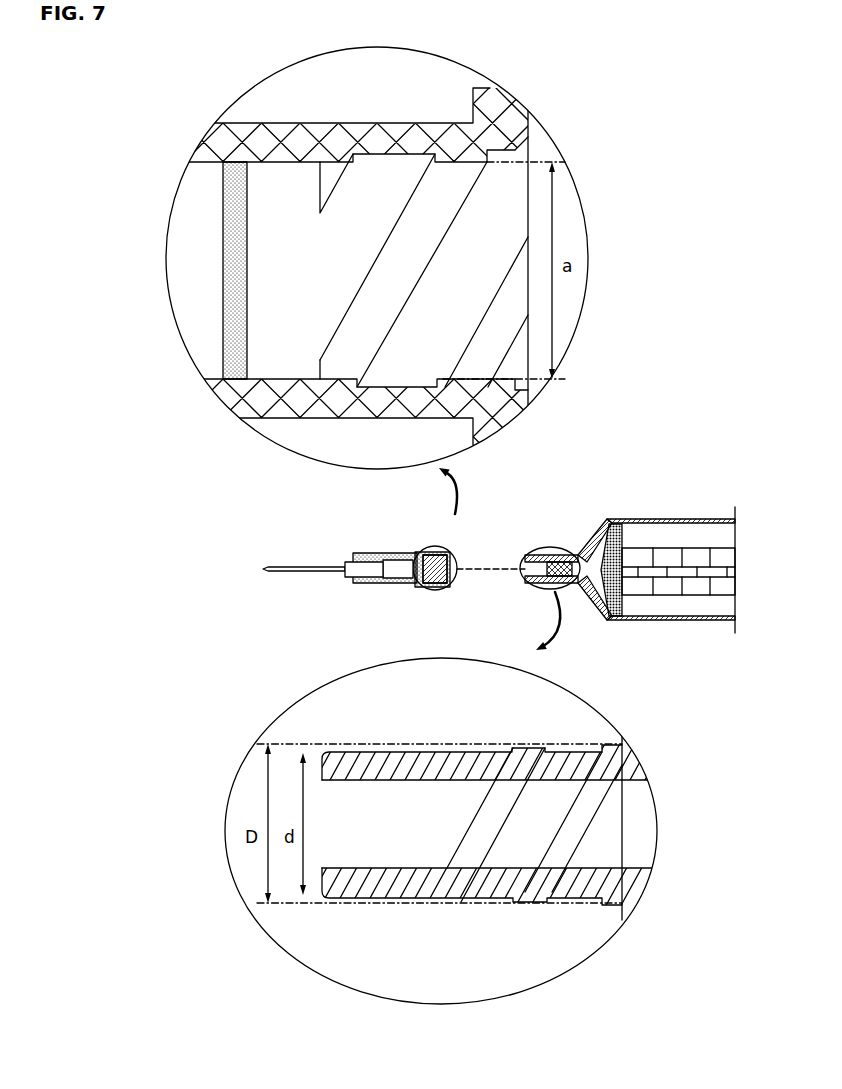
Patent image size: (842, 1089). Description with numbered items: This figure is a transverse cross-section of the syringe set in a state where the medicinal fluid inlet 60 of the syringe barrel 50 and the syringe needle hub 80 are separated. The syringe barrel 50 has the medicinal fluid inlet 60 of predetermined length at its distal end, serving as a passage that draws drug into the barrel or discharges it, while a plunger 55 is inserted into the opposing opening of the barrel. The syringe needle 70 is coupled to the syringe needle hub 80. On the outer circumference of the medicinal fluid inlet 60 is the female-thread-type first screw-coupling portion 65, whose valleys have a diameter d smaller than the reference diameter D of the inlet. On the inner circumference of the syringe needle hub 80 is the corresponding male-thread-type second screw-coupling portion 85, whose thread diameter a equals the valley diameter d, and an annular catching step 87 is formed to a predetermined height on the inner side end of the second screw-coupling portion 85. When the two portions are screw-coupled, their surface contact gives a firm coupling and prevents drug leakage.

The syringe barrel 50 is at (657, 519).
The plunger 55 is at (718, 557).
The medicinal fluid inlet 60 is at (538, 555).
The first screw-coupling portion 65 is at (567, 559).
The syringe needle 70 is at (310, 567).
The syringe needle hub 80 is at (393, 553).
The second screw-coupling portion 85 is at (400, 154).
The annular catching step 87 is at (235, 162).